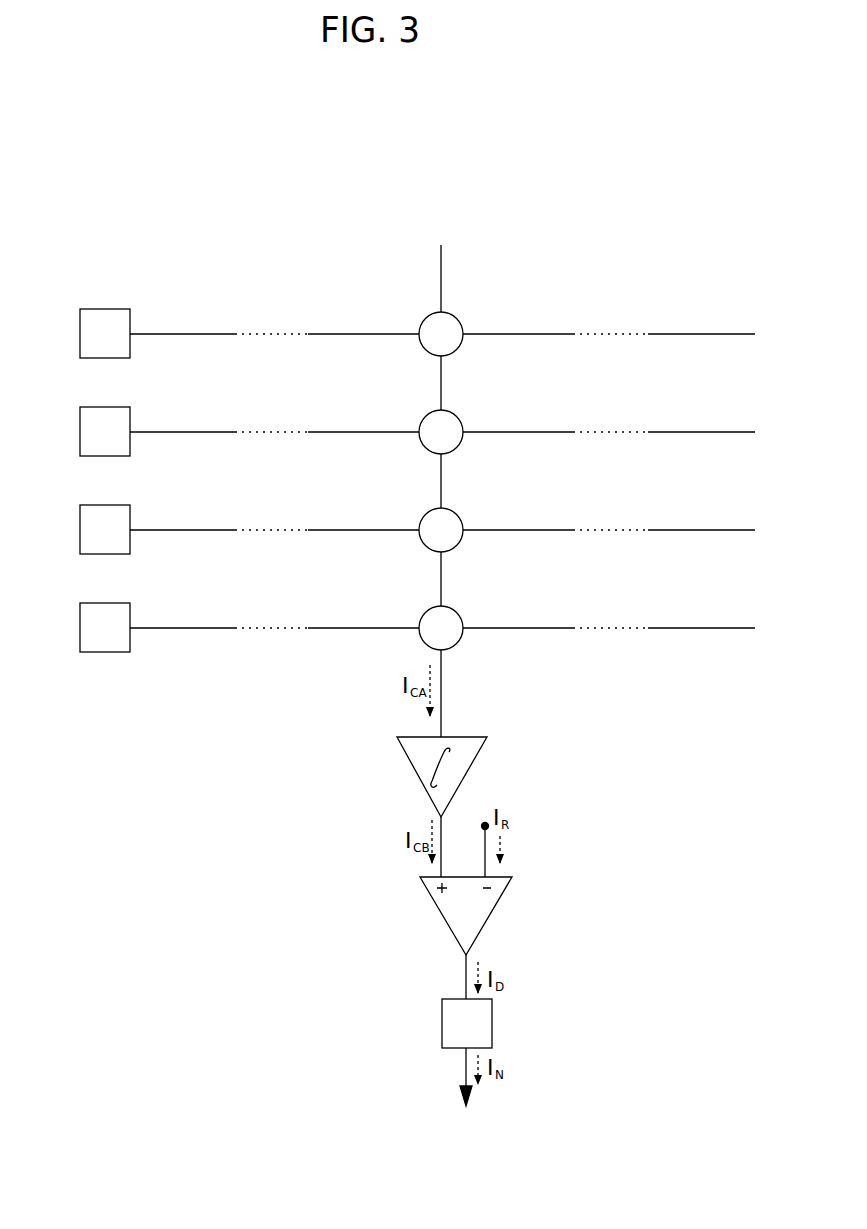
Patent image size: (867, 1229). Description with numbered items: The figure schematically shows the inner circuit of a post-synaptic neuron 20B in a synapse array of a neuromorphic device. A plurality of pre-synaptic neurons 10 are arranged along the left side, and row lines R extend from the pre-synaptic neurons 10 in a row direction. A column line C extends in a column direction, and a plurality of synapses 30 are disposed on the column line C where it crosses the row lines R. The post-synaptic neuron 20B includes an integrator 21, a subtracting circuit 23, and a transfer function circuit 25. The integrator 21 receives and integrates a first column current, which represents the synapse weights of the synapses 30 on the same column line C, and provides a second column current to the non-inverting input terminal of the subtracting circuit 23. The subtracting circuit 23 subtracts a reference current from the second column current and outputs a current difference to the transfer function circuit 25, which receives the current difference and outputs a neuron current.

The pre-synaptic neuron 10 is at (80, 318).
The synapse 30 is at (456, 314).
The post-synaptic neuron 20B is at (337, 765).
The integrator 21 is at (413, 778).
The subtracting circuit 23 is at (433, 910).
The transfer function circuit 25 is at (440, 1030).
The column line C is at (439, 259).
The row line R is at (712, 334).